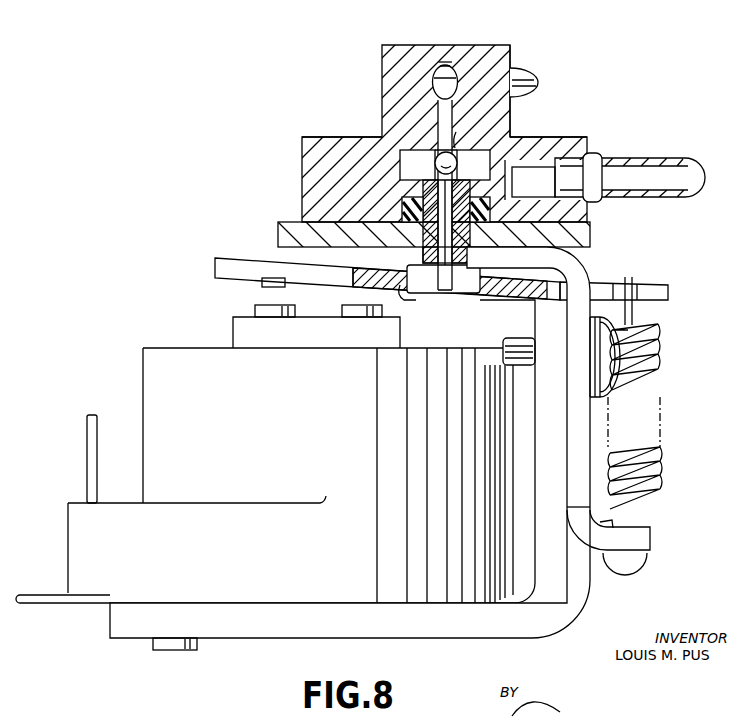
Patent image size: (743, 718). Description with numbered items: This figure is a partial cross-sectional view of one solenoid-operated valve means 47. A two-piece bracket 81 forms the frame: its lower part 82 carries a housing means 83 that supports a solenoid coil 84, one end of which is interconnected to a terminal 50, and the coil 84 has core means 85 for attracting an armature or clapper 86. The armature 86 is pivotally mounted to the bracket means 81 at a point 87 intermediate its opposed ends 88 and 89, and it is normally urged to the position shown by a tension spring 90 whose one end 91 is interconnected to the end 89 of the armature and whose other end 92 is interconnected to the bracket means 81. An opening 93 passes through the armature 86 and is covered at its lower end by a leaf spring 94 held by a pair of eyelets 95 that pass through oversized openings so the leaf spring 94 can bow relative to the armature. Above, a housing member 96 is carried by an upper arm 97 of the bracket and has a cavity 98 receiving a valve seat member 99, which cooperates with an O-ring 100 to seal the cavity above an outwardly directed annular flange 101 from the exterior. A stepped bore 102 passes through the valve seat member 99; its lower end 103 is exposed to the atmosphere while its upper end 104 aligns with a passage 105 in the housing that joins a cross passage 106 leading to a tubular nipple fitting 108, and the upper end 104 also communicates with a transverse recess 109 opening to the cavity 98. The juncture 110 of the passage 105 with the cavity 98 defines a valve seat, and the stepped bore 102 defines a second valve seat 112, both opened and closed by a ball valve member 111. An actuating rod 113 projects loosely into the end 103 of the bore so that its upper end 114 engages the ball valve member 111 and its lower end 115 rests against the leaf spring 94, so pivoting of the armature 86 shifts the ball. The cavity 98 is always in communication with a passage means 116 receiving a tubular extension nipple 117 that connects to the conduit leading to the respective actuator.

The valve means 47 is at (636, 53).
The terminal 50 is at (88, 452).
The two-piece bracket 81 is at (545, 611).
The lower part of bracket 82 is at (505, 622).
The housing means 83 is at (368, 588).
The solenoid coil 84 is at (243, 330).
The core means 85 is at (257, 310).
The armature or clapper 86 is at (236, 262).
The pivot point 87 is at (592, 283).
The armature end 88 is at (215, 266).
The armature end 89 is at (670, 290).
The tension spring 90 is at (660, 368).
The spring end 91 is at (632, 280).
The spring end 92 is at (640, 565).
The opening 93 is at (462, 278).
The leaf spring 94 is at (470, 292).
The eyelets 95 is at (447, 300).
The housing member 96 is at (392, 55).
The upper arm 97 is at (583, 250).
The cavity 98 is at (518, 148).
The valve seat member 99 is at (400, 195).
The O-ring 100 is at (403, 215).
The annular flange 101 is at (488, 197).
The stepped bore 102 is at (430, 231).
The lower end of bore 103 is at (395, 290).
The upper end of bore 104 is at (512, 132).
The passage 105 is at (440, 92).
The cross passage 106 is at (445, 64).
The tubular nipple fitting 108 is at (524, 78).
The transverse recess 109 is at (440, 156).
The juncture 110 is at (434, 150).
The ball valve member 111 is at (452, 150).
The valve seat 112 is at (522, 178).
The actuating rod 113 is at (470, 236).
The upper end of actuating rod 114 is at (435, 165).
The lower end of actuating rod 115 is at (450, 324).
The passage means 116 is at (571, 158).
The tubular extension nipple 117 is at (638, 157).